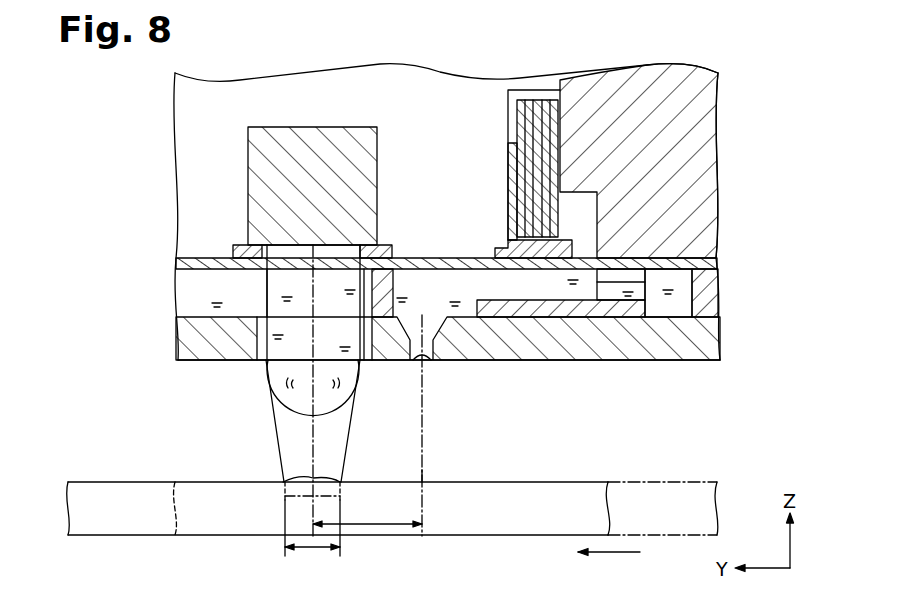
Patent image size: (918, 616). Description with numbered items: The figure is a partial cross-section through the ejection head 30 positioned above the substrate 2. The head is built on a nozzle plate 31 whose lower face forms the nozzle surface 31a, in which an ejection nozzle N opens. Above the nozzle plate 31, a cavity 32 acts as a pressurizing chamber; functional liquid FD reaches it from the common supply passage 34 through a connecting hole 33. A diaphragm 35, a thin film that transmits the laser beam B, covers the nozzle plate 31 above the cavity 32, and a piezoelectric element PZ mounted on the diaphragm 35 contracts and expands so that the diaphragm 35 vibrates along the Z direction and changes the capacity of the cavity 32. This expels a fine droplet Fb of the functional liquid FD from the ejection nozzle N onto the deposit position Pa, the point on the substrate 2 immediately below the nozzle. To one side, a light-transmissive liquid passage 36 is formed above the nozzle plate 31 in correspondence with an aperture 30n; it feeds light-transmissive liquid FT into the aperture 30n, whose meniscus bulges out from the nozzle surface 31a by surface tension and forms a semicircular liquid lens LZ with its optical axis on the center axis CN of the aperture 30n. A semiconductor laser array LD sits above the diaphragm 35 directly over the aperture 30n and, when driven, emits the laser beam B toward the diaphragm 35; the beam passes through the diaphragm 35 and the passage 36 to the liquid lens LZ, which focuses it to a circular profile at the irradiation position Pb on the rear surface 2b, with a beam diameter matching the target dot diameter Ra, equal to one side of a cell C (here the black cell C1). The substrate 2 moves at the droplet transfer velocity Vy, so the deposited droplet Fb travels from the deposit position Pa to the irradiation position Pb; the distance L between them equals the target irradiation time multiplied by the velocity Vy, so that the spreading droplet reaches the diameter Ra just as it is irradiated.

The ejection head 30 is at (740, 97).
The aperture 30n is at (272, 366).
The nozzle plate 31 is at (722, 339).
The nozzle surface 31a is at (683, 361).
The cavity 32 is at (470, 281).
The connecting hole 33 is at (610, 300).
The common supply passage 34 is at (660, 317).
The diaphragm 35 is at (718, 262).
The light-transmissive liquid passage 36 is at (178, 306).
The substrate 2 is at (146, 482).
The rear surface 2b is at (103, 482).
The semiconductor laser array LD is at (248, 140).
The piezoelectric element PZ is at (508, 119).
The light-transmissive liquid FT is at (218, 278).
The functional liquid FD is at (492, 273).
The laser beam B is at (267, 284).
The ejection nozzle N is at (422, 361).
The liquid lens LZ is at (361, 375).
The center axis CN is at (310, 440).
The fine droplet Fb is at (411, 479).
The deposit position Pa is at (426, 481).
The irradiation position Pb is at (283, 481).
The cell C is at (288, 501).
The target dot diameter Ra is at (312, 540).
The distance L is at (367, 512).
The droplet transfer velocity Vy is at (609, 566).